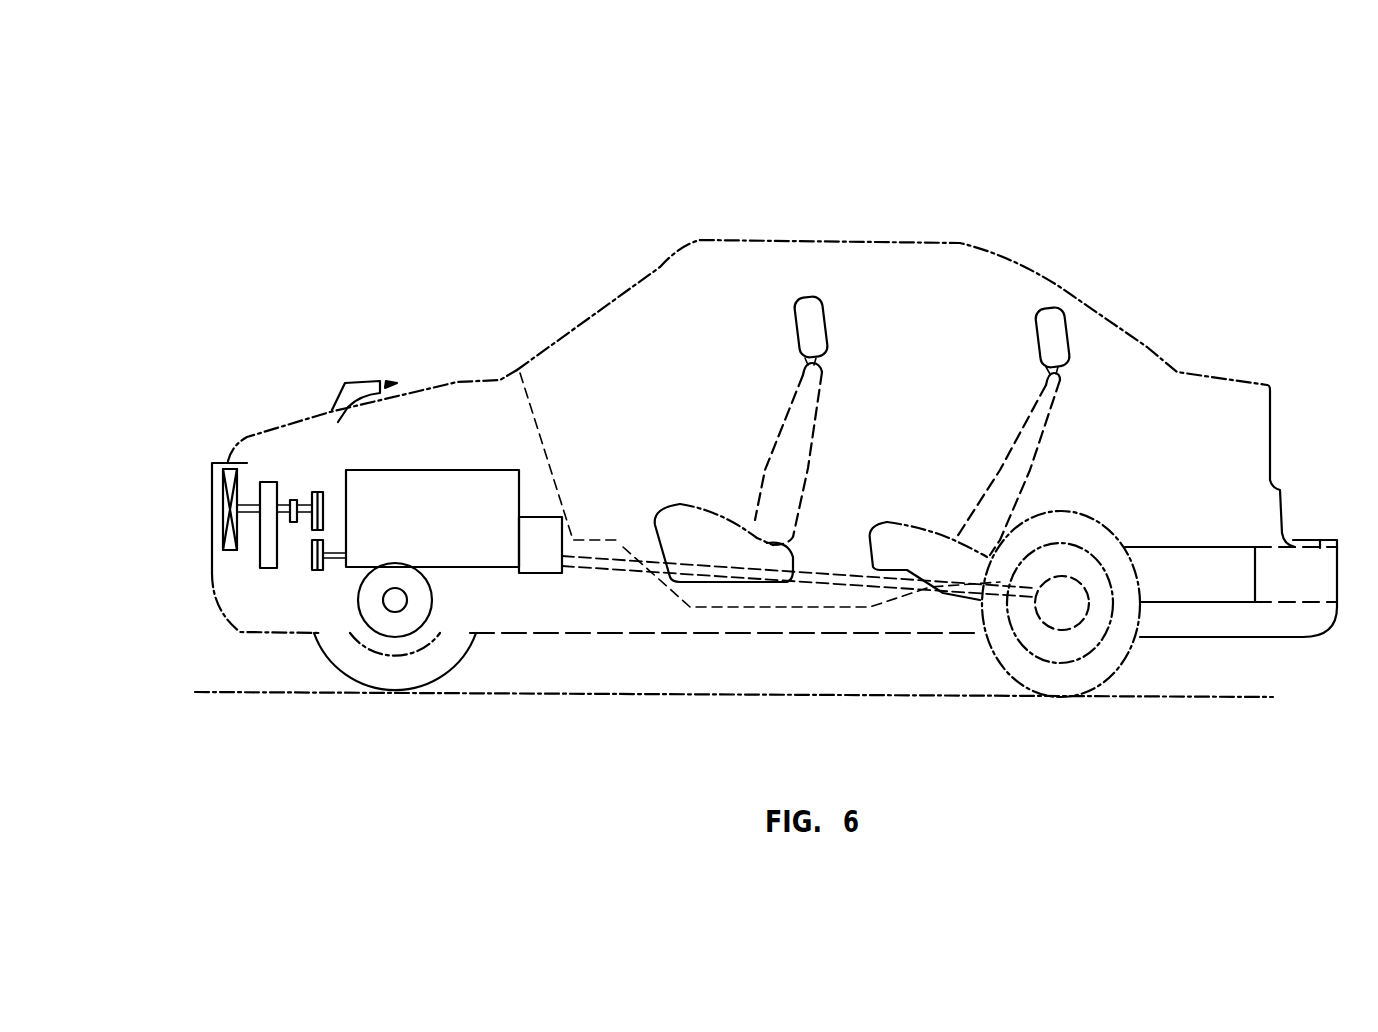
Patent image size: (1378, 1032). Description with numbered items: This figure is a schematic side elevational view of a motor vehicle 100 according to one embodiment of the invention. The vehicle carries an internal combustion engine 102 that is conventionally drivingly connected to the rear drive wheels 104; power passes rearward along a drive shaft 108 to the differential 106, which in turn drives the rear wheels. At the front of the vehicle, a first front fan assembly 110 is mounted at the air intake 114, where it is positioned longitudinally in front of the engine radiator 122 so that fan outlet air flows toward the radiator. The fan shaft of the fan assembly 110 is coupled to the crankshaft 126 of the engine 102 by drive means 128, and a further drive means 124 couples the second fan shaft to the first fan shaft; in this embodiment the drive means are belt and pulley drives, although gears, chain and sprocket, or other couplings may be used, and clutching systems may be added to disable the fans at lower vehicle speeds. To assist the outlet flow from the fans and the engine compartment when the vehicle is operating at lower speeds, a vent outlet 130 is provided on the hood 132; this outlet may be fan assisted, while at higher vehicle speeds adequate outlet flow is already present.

The motor vehicle 100 is at (727, 237).
The internal combustion engine 102 is at (467, 470).
The rear drive wheels 104 is at (1097, 673).
The differential 106 is at (1083, 615).
The drive shaft 108 is at (865, 582).
The first front fan assembly 110 is at (223, 530).
The air intake 114 is at (212, 463).
The engine radiator 122 is at (263, 562).
The drive means 124 is at (293, 498).
The crankshaft 126 is at (337, 557).
The drive means 128 is at (317, 572).
The vent outlet 130 is at (363, 382).
The hood 132 is at (462, 378).